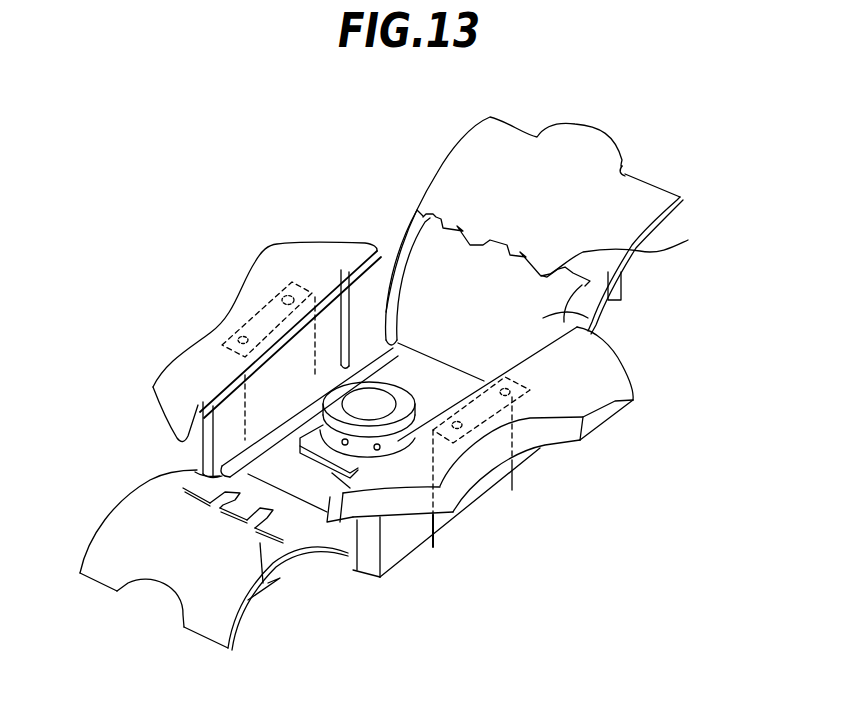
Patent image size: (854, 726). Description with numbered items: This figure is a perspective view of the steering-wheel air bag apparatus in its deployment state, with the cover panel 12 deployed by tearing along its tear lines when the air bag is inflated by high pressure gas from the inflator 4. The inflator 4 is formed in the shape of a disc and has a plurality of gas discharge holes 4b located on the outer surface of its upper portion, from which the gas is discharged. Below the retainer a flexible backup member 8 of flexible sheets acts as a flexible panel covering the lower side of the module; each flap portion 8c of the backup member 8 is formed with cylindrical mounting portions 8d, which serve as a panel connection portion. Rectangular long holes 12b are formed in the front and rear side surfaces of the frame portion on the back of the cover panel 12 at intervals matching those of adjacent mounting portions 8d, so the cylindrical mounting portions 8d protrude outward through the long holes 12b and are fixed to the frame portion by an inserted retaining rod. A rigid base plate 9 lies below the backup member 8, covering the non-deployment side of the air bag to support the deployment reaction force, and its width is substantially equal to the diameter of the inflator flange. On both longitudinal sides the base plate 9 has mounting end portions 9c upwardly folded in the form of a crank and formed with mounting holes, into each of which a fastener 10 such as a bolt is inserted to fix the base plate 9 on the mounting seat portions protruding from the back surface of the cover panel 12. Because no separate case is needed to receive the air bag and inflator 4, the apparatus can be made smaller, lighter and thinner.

The inflator 4 is at (377, 397).
The gas discharge holes 4b is at (378, 447).
The backup member 8 is at (333, 476).
The flap portion 8c is at (418, 252).
The mounting portions 8d is at (438, 223).
The base plate 9 is at (483, 503).
The mounting end portions 9c is at (263, 322).
The fastener 10 is at (289, 300).
The cover panel 12 is at (627, 180).
The long holes 12b is at (283, 675).